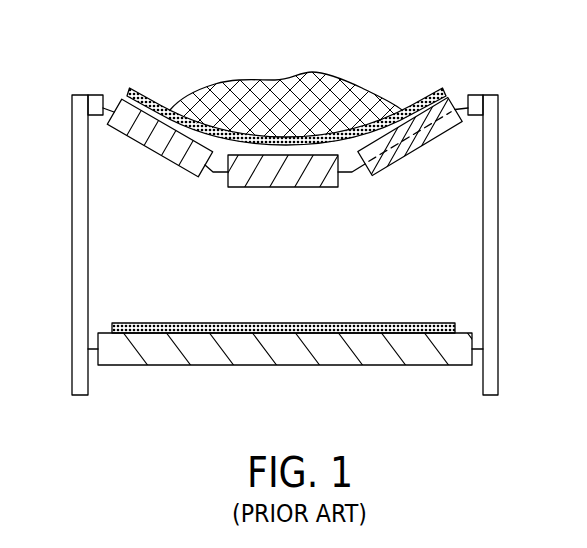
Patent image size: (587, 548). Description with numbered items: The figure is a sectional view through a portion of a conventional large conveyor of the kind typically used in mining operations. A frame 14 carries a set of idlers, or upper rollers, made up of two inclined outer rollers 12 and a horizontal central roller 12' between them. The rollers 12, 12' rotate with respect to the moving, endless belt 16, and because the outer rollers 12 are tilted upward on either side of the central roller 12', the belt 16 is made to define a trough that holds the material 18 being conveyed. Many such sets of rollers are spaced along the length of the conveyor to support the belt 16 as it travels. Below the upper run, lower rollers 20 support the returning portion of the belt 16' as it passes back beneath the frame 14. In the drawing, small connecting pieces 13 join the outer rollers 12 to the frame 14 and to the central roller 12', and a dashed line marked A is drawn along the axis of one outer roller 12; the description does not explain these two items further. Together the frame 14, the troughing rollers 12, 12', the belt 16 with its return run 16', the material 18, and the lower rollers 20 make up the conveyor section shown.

The outer rollers 12 is at (292, 142).
The central roller 12' is at (279, 194).
The connecting link 13 is at (108, 108).
The frame 14 is at (72, 243).
The belt 16 is at (286, 99).
The returning portion of the belt 16' is at (283, 372).
The material 18 is at (318, 90).
The lower rollers 20 is at (148, 348).
The axis A is at (393, 162).